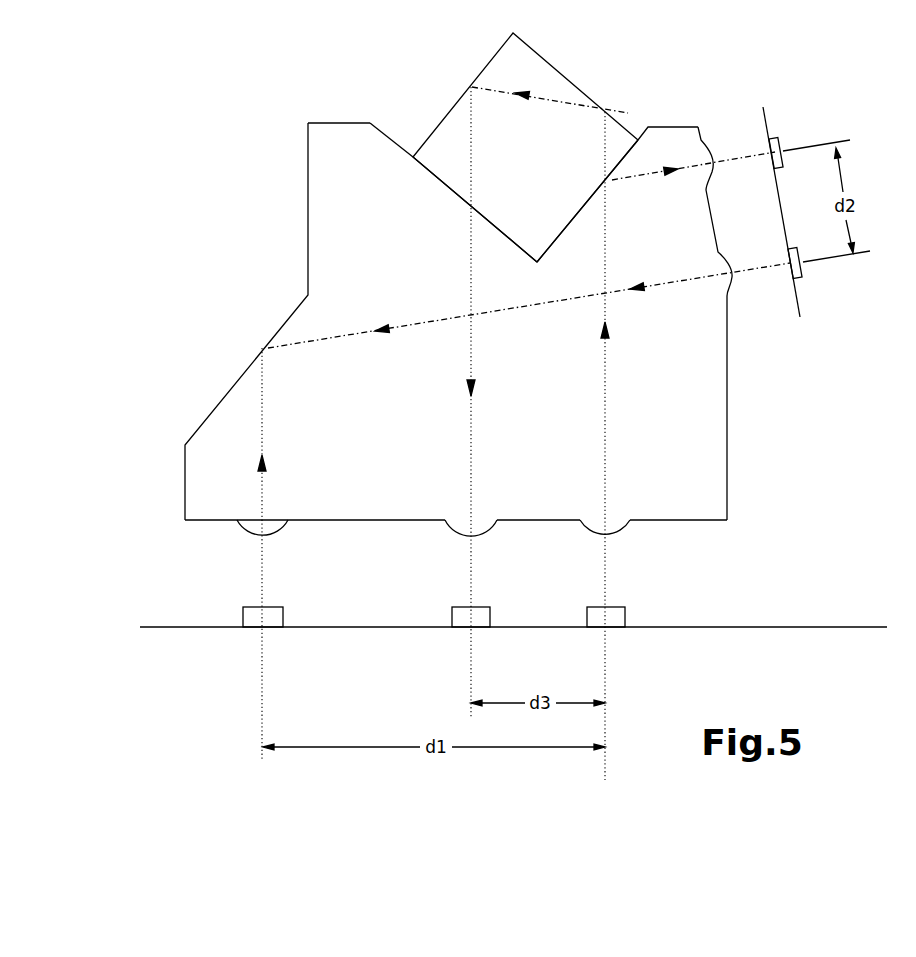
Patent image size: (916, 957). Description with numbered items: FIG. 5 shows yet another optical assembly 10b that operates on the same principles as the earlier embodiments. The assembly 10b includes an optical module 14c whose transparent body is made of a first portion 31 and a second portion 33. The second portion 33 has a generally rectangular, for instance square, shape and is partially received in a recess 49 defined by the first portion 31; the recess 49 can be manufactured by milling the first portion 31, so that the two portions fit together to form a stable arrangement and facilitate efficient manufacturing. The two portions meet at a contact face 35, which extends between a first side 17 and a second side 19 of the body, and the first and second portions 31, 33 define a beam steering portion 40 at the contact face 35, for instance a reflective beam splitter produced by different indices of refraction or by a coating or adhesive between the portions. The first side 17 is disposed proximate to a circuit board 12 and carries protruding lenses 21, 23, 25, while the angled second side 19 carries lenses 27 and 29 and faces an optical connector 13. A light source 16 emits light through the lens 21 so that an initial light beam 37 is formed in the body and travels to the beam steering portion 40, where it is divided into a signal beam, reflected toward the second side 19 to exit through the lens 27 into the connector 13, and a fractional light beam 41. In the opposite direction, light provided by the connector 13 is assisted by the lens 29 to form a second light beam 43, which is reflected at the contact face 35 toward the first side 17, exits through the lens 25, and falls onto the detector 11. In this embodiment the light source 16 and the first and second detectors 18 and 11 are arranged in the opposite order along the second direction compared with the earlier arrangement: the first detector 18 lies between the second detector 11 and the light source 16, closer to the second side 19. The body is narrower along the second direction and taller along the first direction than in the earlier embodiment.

The assembly 10b is at (475, 398).
The detector 11 is at (270, 615).
The circuit board 12 is at (822, 627).
The optical connector 13 is at (773, 122).
The optical module 14c is at (748, 473).
The light source 16 is at (618, 618).
The first side 17 is at (212, 522).
The first detector 18 is at (465, 613).
The second side 19 is at (727, 418).
The lens 21 is at (620, 532).
The lens 23 is at (483, 528).
The lens 25 is at (270, 528).
The lens 27 is at (706, 144).
The lens 29 is at (730, 285).
The first transparent portion 31 is at (710, 492).
The second transparent portion 33 is at (525, 139).
The contact face 35 is at (637, 176).
The initial light beam 37 is at (607, 382).
The beam steering portion 40 is at (557, 233).
The fractional light beam 41 is at (563, 100).
The second light beam 43 is at (495, 316).
The recess 49 is at (392, 138).